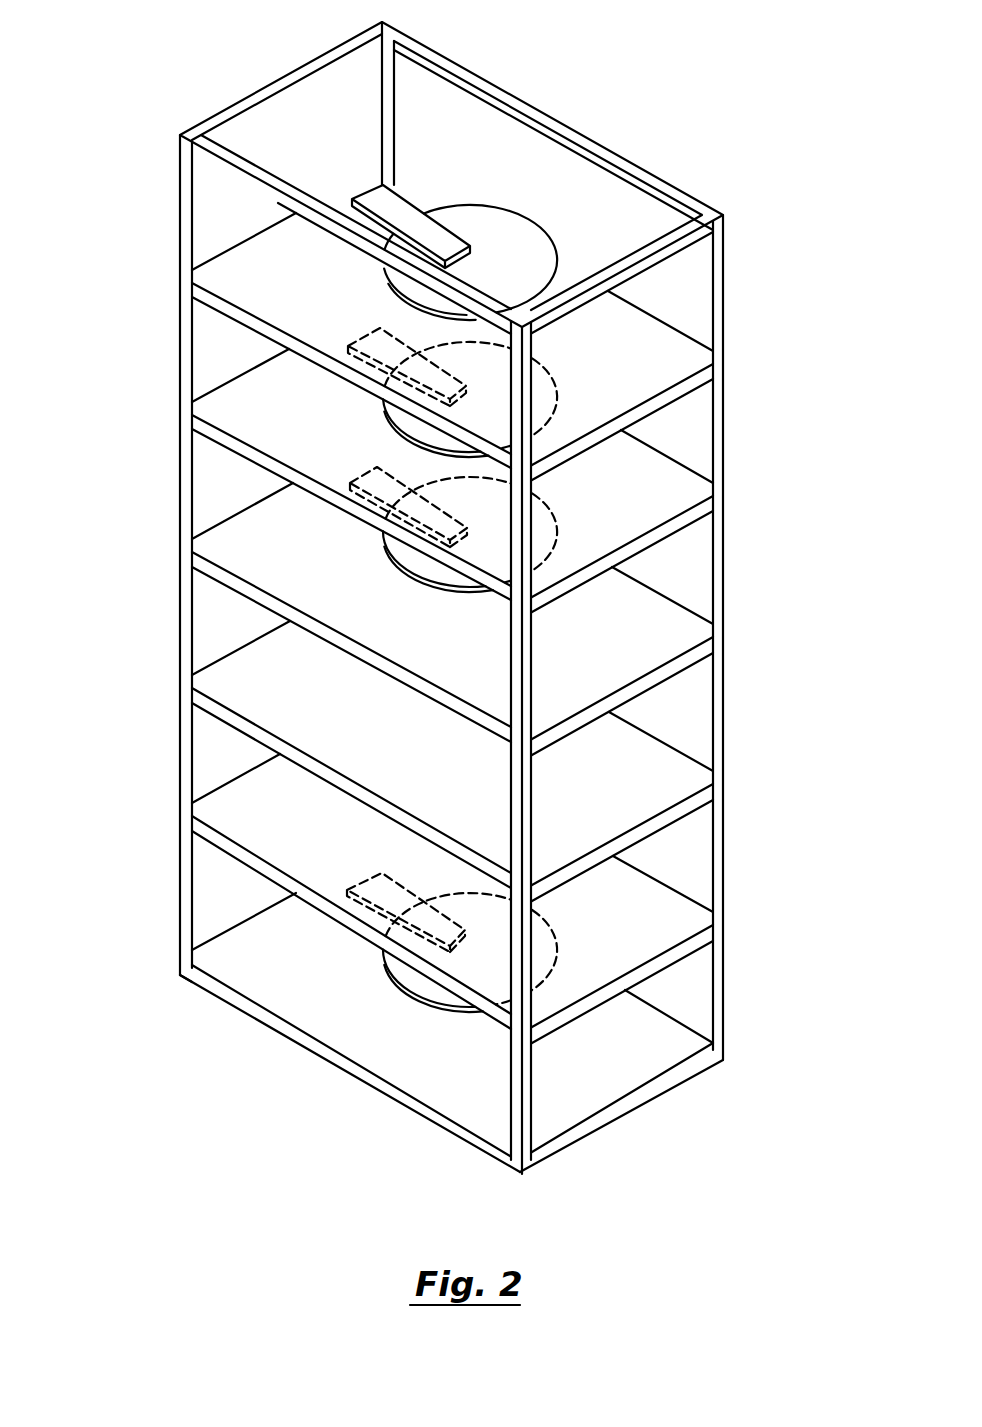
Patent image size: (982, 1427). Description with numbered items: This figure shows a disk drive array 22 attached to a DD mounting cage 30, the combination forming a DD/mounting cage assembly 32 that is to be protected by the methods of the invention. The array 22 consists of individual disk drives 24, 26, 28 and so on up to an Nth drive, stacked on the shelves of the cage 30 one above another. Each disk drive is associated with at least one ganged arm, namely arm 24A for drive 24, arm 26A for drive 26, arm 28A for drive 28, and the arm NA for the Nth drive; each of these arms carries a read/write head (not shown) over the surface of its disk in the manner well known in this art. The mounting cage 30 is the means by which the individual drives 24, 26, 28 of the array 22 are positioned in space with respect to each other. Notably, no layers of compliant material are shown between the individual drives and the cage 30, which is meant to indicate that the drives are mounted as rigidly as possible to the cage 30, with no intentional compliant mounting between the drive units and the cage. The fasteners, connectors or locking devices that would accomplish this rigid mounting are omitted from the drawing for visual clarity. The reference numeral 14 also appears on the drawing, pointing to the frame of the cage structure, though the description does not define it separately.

The rack 14 is at (457, 609).
The DD array 22 is at (537, 268).
The DD mounting cage 30 is at (282, 201).
The DD 24 is at (528, 212).
The arm 24A is at (402, 193).
The DD 26 is at (383, 429).
The arm 26A is at (350, 343).
The DD 28 is at (343, 570).
The arm 28A is at (350, 484).
The Nth disk arm NA is at (370, 885).
The DD/mounting cage assembly 32 is at (752, 202).